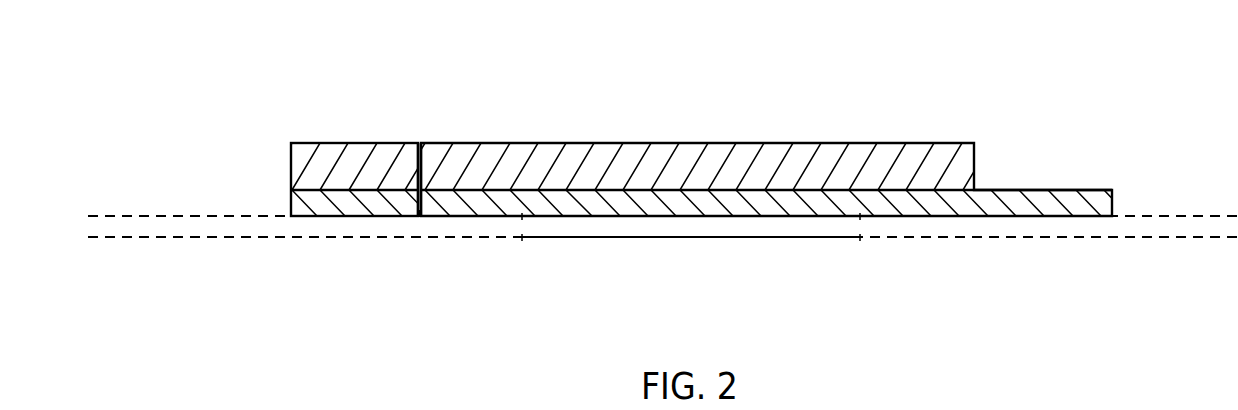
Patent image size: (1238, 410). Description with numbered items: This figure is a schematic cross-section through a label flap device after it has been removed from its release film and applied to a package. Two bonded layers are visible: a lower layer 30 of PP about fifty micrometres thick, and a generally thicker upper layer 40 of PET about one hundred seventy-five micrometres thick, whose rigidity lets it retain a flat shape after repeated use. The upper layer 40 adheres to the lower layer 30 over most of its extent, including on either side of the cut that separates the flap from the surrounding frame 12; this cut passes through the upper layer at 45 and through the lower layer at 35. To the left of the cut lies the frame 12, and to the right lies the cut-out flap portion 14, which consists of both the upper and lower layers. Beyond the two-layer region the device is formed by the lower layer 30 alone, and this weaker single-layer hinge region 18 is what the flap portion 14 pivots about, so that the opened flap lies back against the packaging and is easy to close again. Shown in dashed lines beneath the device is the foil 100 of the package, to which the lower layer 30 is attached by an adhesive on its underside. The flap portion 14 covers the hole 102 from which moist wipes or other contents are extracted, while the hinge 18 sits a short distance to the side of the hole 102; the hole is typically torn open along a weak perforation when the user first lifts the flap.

The surrounding frame 12 is at (330, 99).
The flap portion 14 is at (763, 115).
The hinge region 18 is at (995, 179).
The lower layer 30 is at (1077, 192).
The cut through lower layer 35 is at (419, 217).
The upper layer 40 is at (690, 143).
The cut through upper layer 45 is at (419, 143).
The foil 100 is at (937, 238).
The hole 102 is at (720, 238).